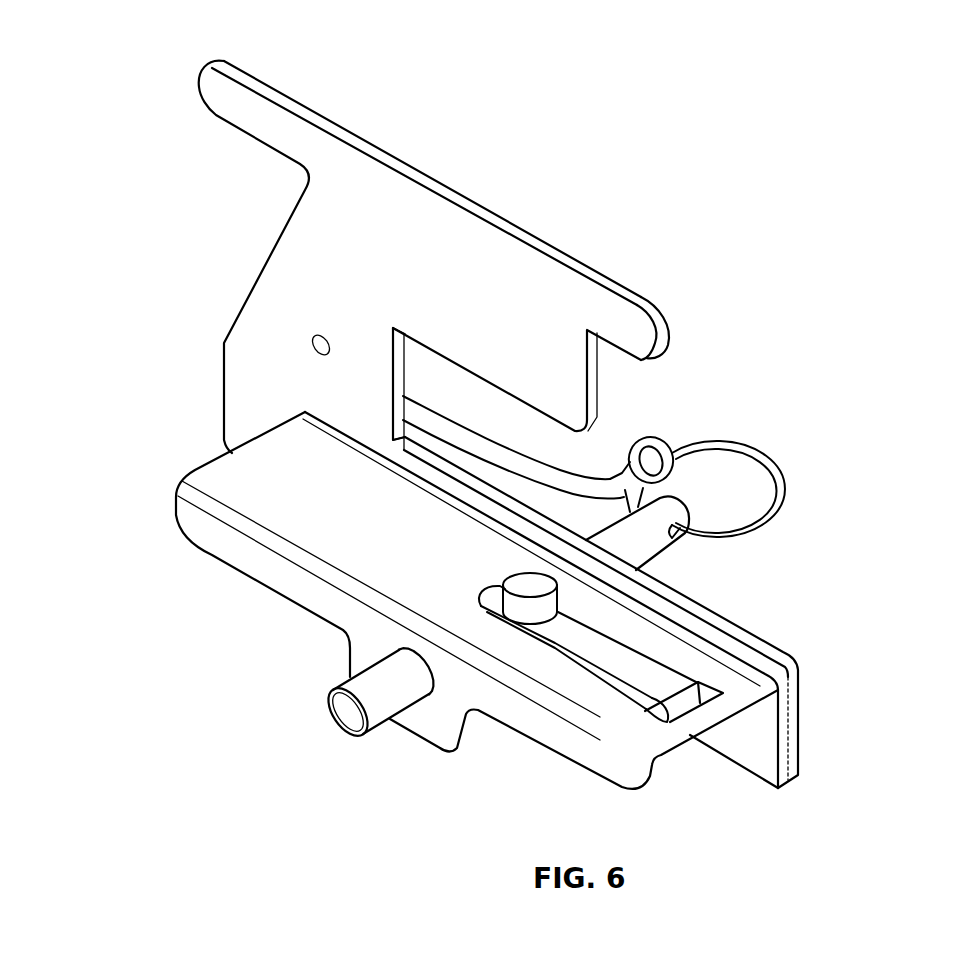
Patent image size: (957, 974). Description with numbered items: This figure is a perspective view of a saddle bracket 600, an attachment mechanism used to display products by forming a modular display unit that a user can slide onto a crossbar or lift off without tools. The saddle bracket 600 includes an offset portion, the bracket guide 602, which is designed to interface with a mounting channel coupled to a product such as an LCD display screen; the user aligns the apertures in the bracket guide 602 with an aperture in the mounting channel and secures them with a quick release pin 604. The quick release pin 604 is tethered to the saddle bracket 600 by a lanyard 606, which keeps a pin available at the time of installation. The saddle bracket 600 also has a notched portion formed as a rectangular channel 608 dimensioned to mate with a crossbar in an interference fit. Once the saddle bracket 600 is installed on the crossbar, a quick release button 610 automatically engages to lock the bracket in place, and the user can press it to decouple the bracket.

The saddle bracket 600 is at (70, 66).
The bracket guide 602 is at (210, 478).
The quick release pin 604 is at (777, 467).
The lanyard 606 is at (482, 450).
The rectangular channel 608 is at (381, 386).
The quick release button 610 is at (508, 585).